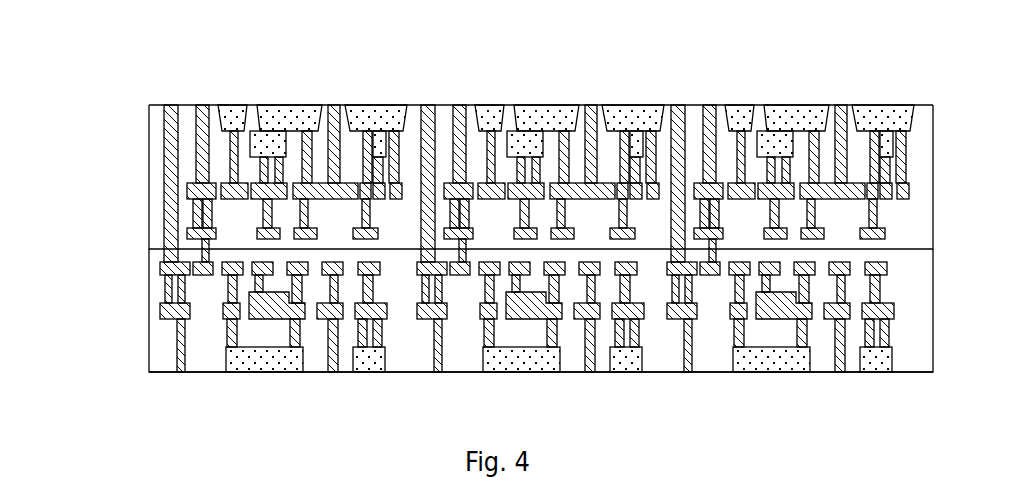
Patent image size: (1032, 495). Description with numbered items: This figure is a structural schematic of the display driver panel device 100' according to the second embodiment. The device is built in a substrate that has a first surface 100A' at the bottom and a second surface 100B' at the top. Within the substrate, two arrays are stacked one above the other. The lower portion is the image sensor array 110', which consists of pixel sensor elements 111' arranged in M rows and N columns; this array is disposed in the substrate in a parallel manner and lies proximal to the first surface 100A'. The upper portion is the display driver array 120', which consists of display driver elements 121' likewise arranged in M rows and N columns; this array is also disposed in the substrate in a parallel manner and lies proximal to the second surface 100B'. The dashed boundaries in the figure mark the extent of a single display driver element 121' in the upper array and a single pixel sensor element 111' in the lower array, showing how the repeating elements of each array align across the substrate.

The display driver panel device 100' is at (475, 222).
The first surface 100A' is at (536, 404).
The second surface 100B' is at (530, 72).
The display driver array 120' is at (508, 164).
The image sensor array 110' is at (508, 328).
The display driver element 121' is at (543, 164).
The pixel sensor element 111' is at (536, 328).